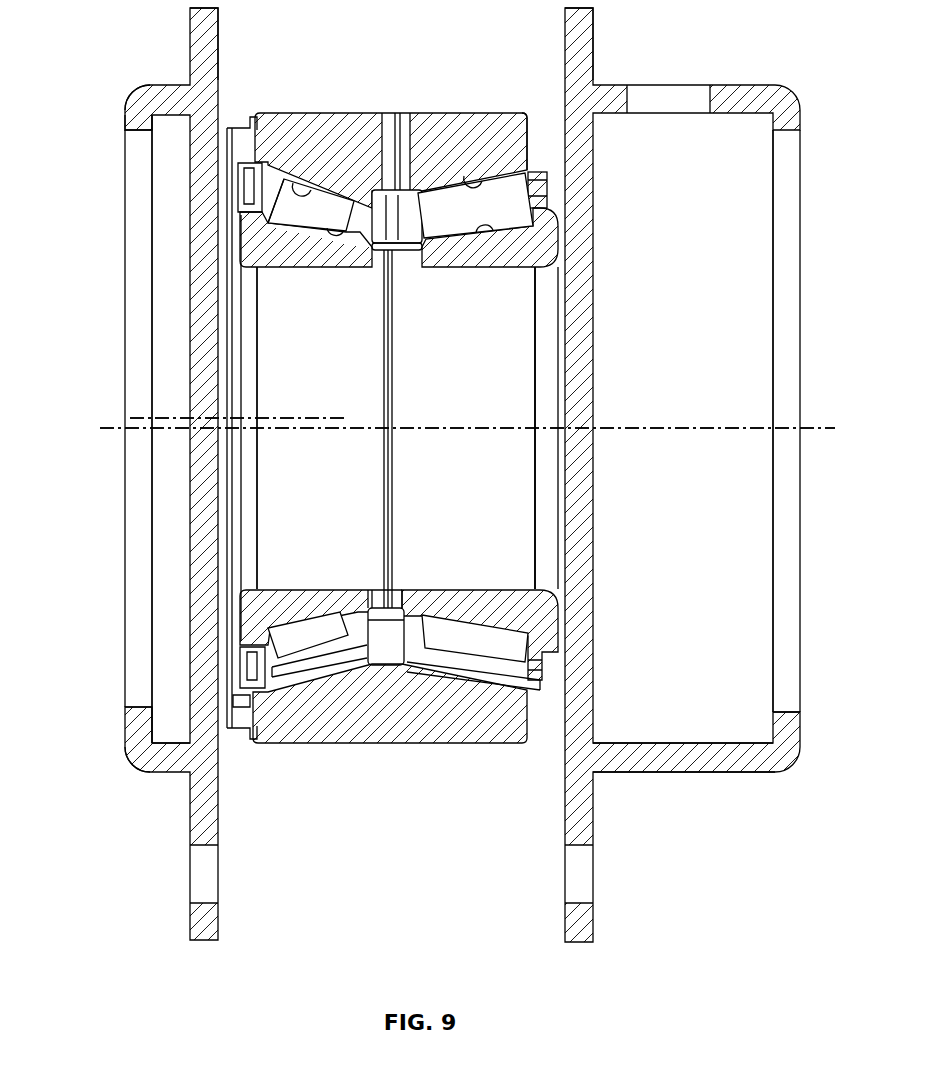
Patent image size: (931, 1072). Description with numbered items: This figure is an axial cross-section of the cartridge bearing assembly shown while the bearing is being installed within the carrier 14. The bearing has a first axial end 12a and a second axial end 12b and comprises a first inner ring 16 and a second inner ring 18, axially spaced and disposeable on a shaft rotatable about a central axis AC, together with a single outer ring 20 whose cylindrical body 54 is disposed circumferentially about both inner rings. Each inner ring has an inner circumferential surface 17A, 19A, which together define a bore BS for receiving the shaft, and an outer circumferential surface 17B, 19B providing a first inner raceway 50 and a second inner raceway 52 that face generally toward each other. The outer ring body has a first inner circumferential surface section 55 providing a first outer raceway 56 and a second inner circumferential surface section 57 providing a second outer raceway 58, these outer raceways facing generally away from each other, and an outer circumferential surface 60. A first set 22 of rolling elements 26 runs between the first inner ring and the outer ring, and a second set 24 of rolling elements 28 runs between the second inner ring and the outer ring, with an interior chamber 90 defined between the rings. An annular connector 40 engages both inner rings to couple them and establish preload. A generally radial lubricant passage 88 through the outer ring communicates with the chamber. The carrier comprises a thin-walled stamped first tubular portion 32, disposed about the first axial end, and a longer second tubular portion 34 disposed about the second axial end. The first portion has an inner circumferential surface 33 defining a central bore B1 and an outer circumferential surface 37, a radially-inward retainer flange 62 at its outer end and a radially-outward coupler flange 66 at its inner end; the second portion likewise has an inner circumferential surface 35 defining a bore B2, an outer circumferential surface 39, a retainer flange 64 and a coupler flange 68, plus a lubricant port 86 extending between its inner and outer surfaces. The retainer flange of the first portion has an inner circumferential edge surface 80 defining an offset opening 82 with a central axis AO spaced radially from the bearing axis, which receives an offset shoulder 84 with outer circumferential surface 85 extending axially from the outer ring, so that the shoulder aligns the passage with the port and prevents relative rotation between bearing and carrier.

The first tubular portion 32 is at (166, 40).
The coupler flange 66 is at (216, 22).
The carrier 14 is at (123, 100).
The offset opening 82 is at (136, 132).
The inner circumferential edge surface 80 is at (136, 258).
The retainer flange 62 is at (130, 718).
The inner circumferential surface 33 is at (176, 742).
The outer circumferential surface 37 is at (166, 775).
The second tubular portion 34 is at (729, 60).
The coupler flange 68 is at (572, 28).
The lubricant port 86 is at (664, 98).
The retainer flange 64 is at (778, 724).
The inner circumferential surface 35 is at (628, 742).
The outer circumferential surface 39 is at (712, 775).
The offset shoulder 84 is at (234, 144).
The outer circumferential surface 85 is at (241, 127).
The outer ring 20 is at (300, 111).
The cylindrical body 54 is at (500, 123).
The lubricant passage 88 is at (403, 128).
The interior chamber 90 is at (390, 214).
The first inner ring 16 is at (244, 240).
The second inner ring 18 is at (562, 224).
The second inner circumferential surface section 57 is at (502, 179).
The outer circumferential surface 17B is at (334, 247).
The outer circumferential surface 19B is at (455, 240).
The first inner circumferential surface section 55 is at (306, 190).
The first inner raceway 50 is at (318, 228).
The second inner raceway 52 is at (456, 232).
The first outer raceway 56 is at (290, 236).
The second outer raceway 58 is at (500, 188).
The inner circumferential surface 17A is at (303, 372).
The inner circumferential surface 19A is at (441, 372).
The outer circumferential surface 60 is at (423, 745).
The annular connector 40 is at (385, 631).
The first axial end 12a is at (252, 618).
The second axial end 12b is at (558, 622).
The rolling elements 26 is at (318, 624).
The rolling elements 28 is at (493, 642).
The first set of rolling elements 22 is at (298, 643).
The second set of rolling elements 24 is at (466, 651).
The bore BS is at (513, 362).
The central axis of offset opening AO is at (175, 420).
The central axis AC is at (706, 426).
The central bore B1 is at (168, 520).
The central bore B2 is at (762, 548).